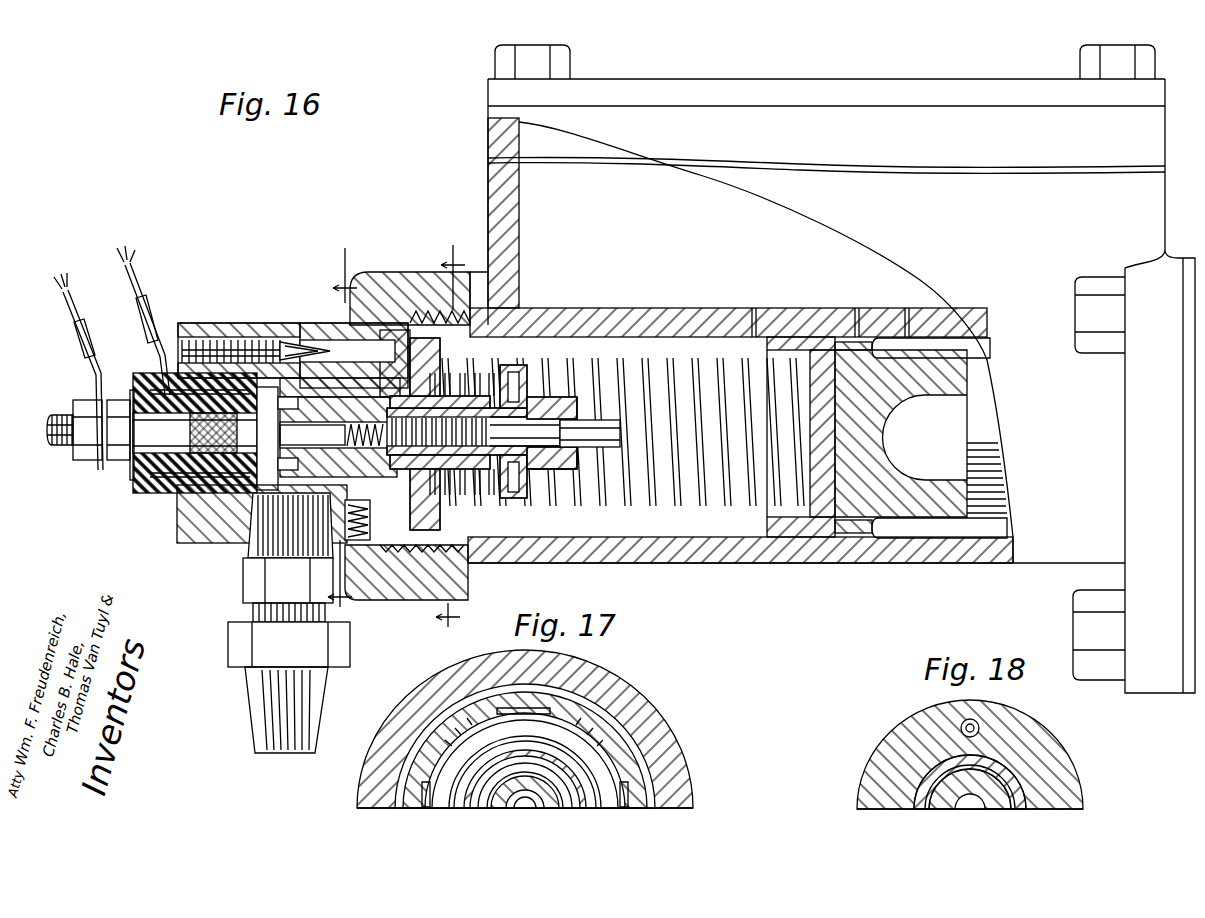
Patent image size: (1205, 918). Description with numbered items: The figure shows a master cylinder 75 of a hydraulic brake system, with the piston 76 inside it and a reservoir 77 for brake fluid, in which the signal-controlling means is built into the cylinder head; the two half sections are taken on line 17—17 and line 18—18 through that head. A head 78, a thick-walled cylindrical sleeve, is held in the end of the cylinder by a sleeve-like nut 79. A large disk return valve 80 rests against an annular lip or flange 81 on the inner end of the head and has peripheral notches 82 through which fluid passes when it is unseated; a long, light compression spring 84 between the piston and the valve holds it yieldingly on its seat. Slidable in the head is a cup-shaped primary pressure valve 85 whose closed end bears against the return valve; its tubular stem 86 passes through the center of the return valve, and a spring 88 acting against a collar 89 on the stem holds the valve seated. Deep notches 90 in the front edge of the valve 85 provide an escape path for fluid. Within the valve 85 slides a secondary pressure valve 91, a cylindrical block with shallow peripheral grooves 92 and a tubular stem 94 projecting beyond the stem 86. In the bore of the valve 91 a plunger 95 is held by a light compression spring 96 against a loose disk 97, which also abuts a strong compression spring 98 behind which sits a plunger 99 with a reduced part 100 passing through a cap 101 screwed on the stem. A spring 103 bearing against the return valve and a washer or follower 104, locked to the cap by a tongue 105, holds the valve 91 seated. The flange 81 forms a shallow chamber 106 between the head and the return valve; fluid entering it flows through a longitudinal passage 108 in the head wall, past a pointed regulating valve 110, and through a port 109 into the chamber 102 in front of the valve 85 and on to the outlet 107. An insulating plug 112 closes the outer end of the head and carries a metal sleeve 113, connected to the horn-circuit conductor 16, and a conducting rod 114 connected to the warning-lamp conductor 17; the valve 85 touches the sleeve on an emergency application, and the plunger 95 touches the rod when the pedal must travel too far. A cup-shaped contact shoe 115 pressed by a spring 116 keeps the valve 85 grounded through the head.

In FIG. 16, the conductor 16 is at (133, 266).
In FIG. 16, the conductor 17 is at (66, 297).
In FIG. 16, the section line 18 is at (341, 423).
In FIG. 16, the master cylinder 75 is at (662, 318).
In FIG. 17, the master cylinder 75 is at (623, 728).
In FIG. 16, the piston 76 is at (895, 358).
In FIG. 16, the reservoir 77 is at (520, 236).
In FIG. 16, the head 78 is at (185, 538).
In FIG. 18, the head 78 is at (1060, 767).
In FIG. 16, the sleeve-like nut 79 is at (390, 320).
In FIG. 17, the sleeve-like nut 79 is at (612, 733).
In FIG. 16, the disk valve 80 is at (430, 316).
In FIG. 17, the disk valve 80 is at (583, 712).
In FIG. 16, the annular lip or flange 81 is at (398, 277).
In FIG. 16, the peripheral notches 82 is at (415, 590).
In FIG. 17, the peripheral notches 82 is at (515, 712).
In FIG. 16, the compression spring 84 is at (712, 360).
In FIG. 17, the compression spring 84 is at (452, 768).
In FIG. 16, the primary pressure valve 85 is at (292, 398).
In FIG. 18, the primary pressure valve 85 is at (1020, 800).
In FIG. 16, the tubular stem 86 is at (452, 498).
In FIG. 17, the tubular stem 86 is at (560, 808).
In FIG. 16, the spring 88 is at (470, 374).
In FIG. 17, the spring 88 is at (520, 791).
In FIG. 16, the flange or collar 89 is at (492, 500).
In FIG. 16, the notches 90 is at (292, 460).
In FIG. 16, the secondary pressure valve 91 is at (310, 410).
In FIG. 18, the secondary pressure valve 91 is at (923, 777).
In FIG. 18, the peripheral grooves 92 is at (910, 797).
In FIG. 16, the tubular stem 94 is at (524, 486).
In FIG. 17, the tubular stem 94 is at (525, 804).
In FIG. 16, the plunger 95 is at (285, 430).
In FIG. 16, the compression spring 96 is at (312, 433).
In FIG. 18, the compression spring 96 is at (968, 809).
In FIG. 16, the loose disk 97 is at (347, 351).
In FIG. 16, the compression spring 98 is at (473, 431).
In FIG. 16, the plunger 99 is at (525, 431).
In FIG. 16, the reduced-diameter part 100 is at (620, 436).
In FIG. 16, the cap 101 is at (590, 396).
In FIG. 16, the chamber 102 is at (262, 495).
In FIG. 16, the spring 103 is at (512, 366).
In FIG. 17, the spring 103 is at (440, 808).
In FIG. 16, the washer or follower 104 is at (513, 458).
In FIG. 16, the tongue 105 is at (550, 400).
In FIG. 16, the shallow chamber 106 is at (432, 352).
In FIG. 16, the outlet 107 is at (250, 587).
In FIG. 16, the longitudinal passage 108 is at (330, 340).
In FIG. 18, the longitudinal passage 108 is at (965, 722).
In FIG. 16, the port 109 is at (295, 342).
In FIG. 16, the regulating valve 110 is at (250, 338).
In FIG. 18, the regulating valve 110 is at (960, 728).
In FIG. 16, the plug 112 is at (135, 497).
In FIG. 16, the metal sleeve 113 is at (197, 487).
In FIG. 16, the rod 114 is at (60, 418).
In FIG. 16, the contact shoe 115 is at (288, 580).
In FIG. 16, the spring 116 is at (350, 527).